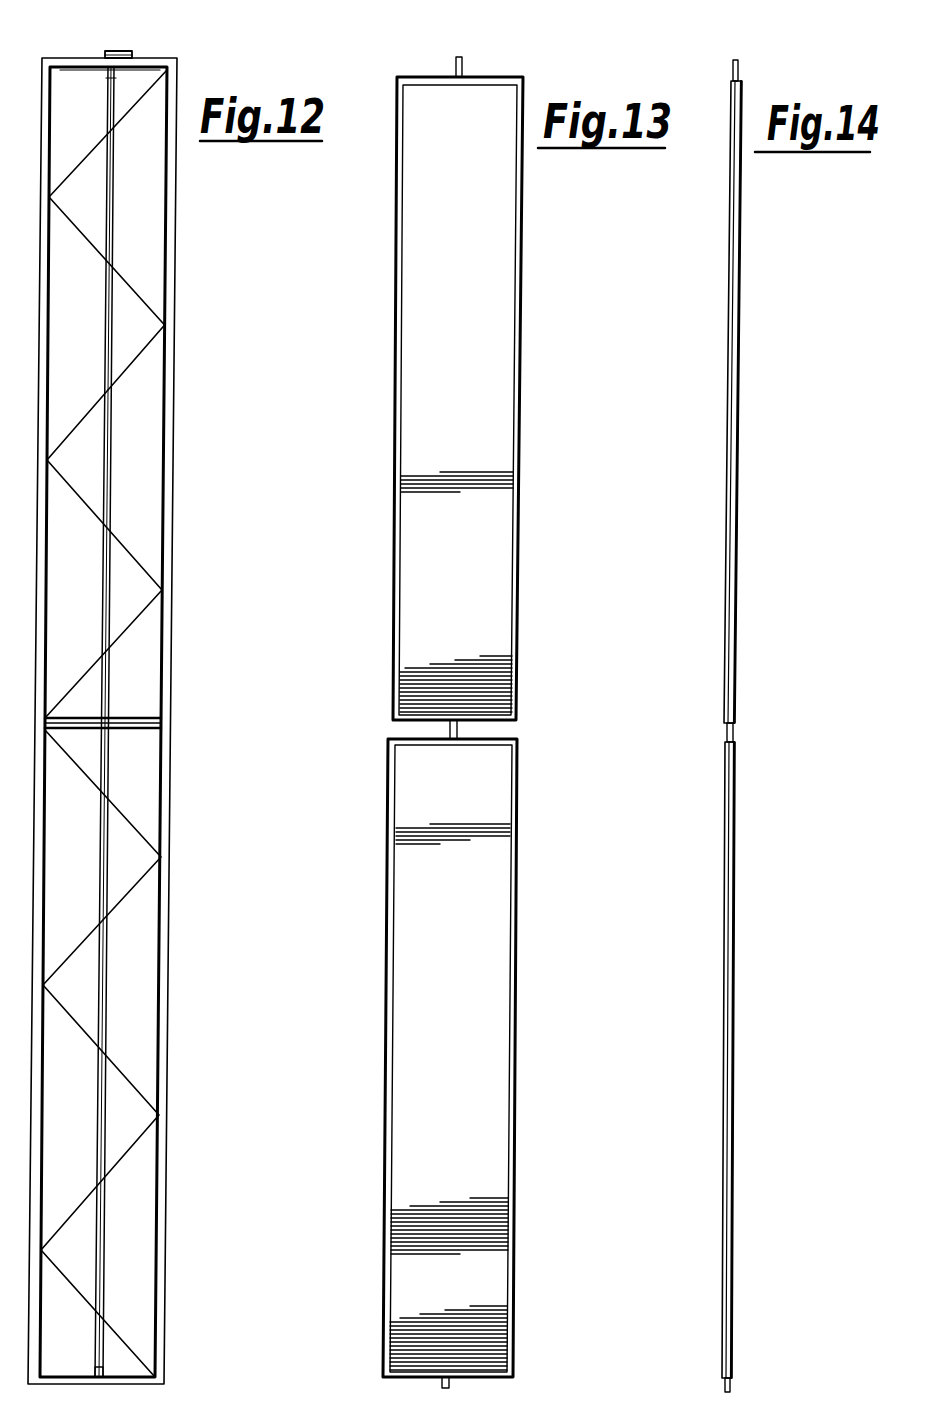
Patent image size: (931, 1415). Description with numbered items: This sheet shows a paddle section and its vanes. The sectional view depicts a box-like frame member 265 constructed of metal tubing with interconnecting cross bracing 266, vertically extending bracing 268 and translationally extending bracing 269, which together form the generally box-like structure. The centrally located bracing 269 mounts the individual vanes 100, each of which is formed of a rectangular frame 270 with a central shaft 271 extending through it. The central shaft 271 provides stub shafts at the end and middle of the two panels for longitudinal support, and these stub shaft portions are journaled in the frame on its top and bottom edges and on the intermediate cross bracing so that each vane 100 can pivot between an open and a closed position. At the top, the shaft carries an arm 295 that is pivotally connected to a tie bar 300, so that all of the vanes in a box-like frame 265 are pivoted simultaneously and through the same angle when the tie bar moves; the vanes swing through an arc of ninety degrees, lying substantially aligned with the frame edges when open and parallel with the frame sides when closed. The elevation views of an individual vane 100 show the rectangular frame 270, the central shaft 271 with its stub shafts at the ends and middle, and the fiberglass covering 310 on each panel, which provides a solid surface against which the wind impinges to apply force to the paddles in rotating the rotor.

In FIG. 12, the vane 100 is at (112, 435).
In FIG. 13, the vane 100 is at (381, 1236).
In FIG. 12, the box-like frame member 265 is at (180, 490).
In FIG. 12, the cross bracing 266 is at (140, 882).
In FIG. 12, the vertically extending bracing 268 is at (170, 787).
In FIG. 12, the translationally extending bracing 269 is at (128, 718).
In FIG. 13, the rectangular frame 270 is at (521, 539).
In FIG. 14, the rectangular frame 270 is at (735, 906).
In FIG. 13, the central shaft 271 is at (459, 733).
In FIG. 14, the central shaft 271 is at (735, 740).
In FIG. 12, the arm 295 is at (129, 51).
In FIG. 12, the tie bar 300 is at (143, 53).
In FIG. 13, the fiberglass covering 310 is at (495, 890).